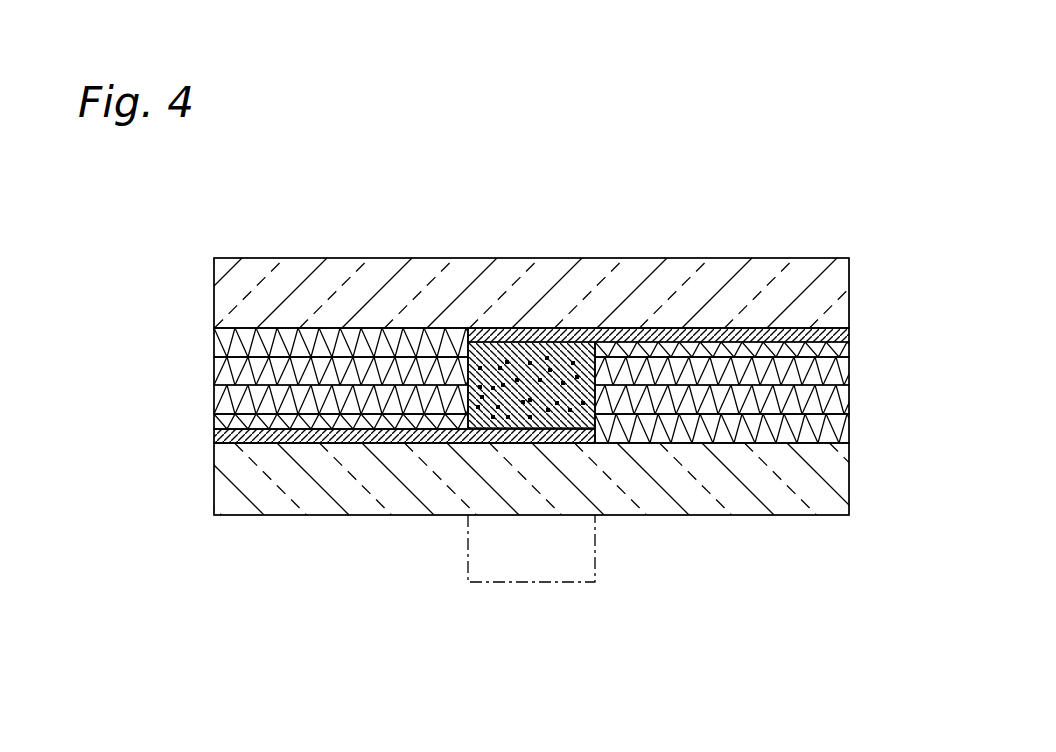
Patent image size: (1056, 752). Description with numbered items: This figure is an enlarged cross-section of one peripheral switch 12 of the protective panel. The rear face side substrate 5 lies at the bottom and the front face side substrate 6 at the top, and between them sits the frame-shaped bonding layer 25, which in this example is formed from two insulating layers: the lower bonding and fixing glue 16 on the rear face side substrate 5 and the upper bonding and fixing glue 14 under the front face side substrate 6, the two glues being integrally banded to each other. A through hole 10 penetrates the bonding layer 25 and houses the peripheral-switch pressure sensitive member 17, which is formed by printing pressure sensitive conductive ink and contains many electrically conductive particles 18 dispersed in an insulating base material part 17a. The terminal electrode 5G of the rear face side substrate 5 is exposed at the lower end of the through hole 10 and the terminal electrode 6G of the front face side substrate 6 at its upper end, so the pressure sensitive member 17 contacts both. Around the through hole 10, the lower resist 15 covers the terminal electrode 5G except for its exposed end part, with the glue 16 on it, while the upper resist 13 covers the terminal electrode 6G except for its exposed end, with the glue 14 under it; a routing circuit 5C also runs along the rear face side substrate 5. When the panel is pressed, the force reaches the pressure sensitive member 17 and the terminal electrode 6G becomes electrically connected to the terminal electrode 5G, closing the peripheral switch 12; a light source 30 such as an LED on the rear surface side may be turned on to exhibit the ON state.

The through hole 10 is at (467, 353).
The front face side substrate 6 is at (837, 295).
The terminal electrode 6G is at (580, 337).
The upper resist 13 is at (213, 340).
The frame-shaped bonding layer 25 is at (80, 355).
The upper bonding and fixing glue 14 is at (213, 368).
The lower bonding and fixing glue 16 is at (213, 398).
The lower resist 15 is at (213, 423).
The routing circuit 5C is at (326, 437).
The rear face side substrate 5 is at (840, 502).
The terminal electrode 5G is at (598, 440).
The peripheral-switch pressure sensitive member 17 is at (493, 438).
The insulating base material part 17a is at (552, 385).
The conductive particles 18 is at (551, 365).
The peripheral switch 12 is at (465, 465).
The light source 30 is at (482, 583).